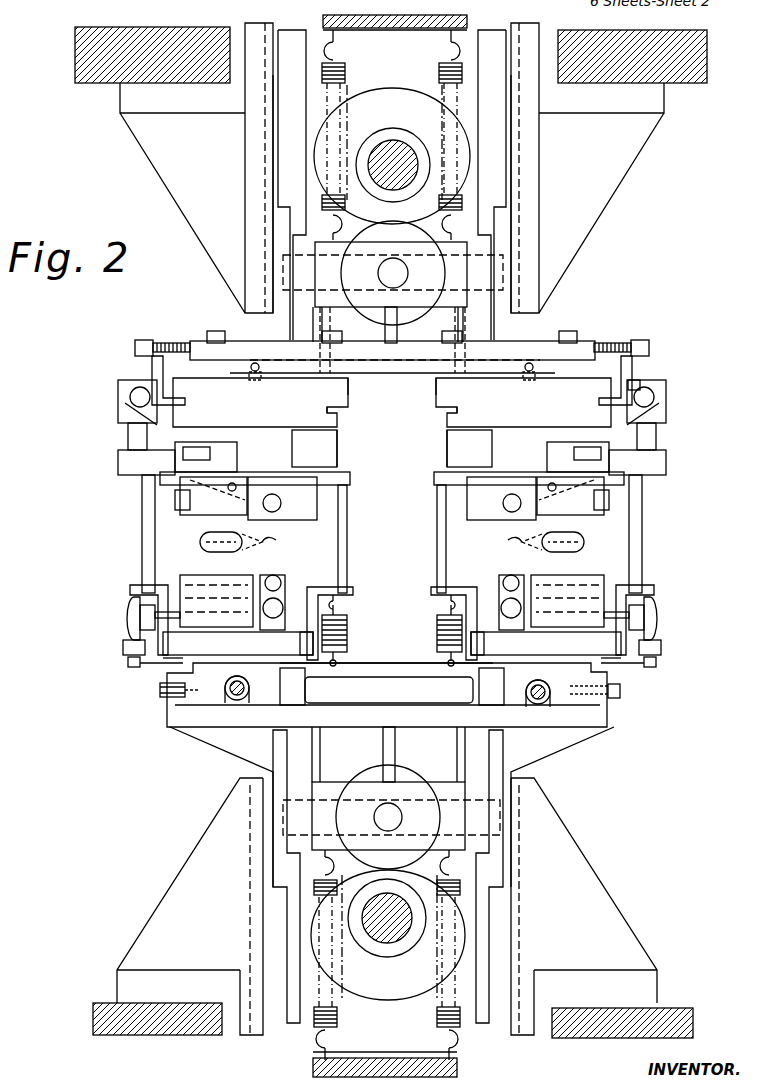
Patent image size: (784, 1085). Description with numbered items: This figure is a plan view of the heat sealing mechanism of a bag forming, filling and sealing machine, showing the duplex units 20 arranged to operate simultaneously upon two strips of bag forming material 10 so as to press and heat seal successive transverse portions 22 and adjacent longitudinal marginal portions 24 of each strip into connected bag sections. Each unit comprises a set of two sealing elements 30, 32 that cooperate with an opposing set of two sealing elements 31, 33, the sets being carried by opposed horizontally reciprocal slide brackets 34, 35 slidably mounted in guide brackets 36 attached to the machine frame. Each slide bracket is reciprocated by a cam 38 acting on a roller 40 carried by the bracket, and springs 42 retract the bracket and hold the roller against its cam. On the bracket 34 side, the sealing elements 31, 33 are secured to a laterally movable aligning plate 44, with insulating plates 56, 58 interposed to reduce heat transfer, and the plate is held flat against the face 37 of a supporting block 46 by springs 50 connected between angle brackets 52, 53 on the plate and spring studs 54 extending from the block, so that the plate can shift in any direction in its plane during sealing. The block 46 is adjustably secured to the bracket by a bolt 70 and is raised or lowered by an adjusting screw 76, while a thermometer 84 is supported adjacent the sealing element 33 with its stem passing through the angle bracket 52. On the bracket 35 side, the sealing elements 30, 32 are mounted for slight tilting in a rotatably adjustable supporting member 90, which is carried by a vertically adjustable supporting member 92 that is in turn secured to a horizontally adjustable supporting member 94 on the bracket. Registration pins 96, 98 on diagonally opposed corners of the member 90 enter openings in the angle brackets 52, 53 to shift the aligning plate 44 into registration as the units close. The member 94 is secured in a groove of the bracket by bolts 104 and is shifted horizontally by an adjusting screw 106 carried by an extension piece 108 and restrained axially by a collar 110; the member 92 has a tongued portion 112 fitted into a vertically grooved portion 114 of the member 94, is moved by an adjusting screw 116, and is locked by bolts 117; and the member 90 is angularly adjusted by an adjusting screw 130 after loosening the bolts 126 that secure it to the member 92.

The duplex units 20 is at (69, 533).
The wire 10 is at (262, 544).
The transverse portions 22 is at (205, 548).
The longitudinal marginal portions 24 is at (392, 546).
The sealing element 30 is at (282, 512).
The sealing element 31 is at (287, 582).
The sealing element 32 is at (200, 515).
The sealing element 33 is at (392, 601).
The slide bracket 34 is at (548, 757).
The slide bracket 35 is at (540, 340).
The guide brackets 36 is at (168, 176).
The face 37 is at (389, 690).
The cam 38 is at (390, 544).
The roller 40 is at (403, 318).
The springs 42 is at (440, 72).
The aligning plate 44 is at (170, 660).
The supporting block 46 is at (190, 727).
The springs 50 is at (125, 646).
The angle bracket 52 is at (130, 590).
The angle bracket 53 is at (430, 590).
The spring studs 54 is at (128, 662).
The insulating plate 56 is at (377, 643).
The insulating plate 58 is at (245, 634).
The bolt 70 is at (165, 697).
The adjusting screw 76 is at (240, 700).
The thermometer 84 is at (128, 616).
The rotatably adjustable supporting member 90 is at (447, 452).
The vertically adjustable supporting member 92 is at (447, 424).
The horizontally adjustable supporting member 94 is at (447, 400).
The registration pin 96 is at (435, 538).
The registration pin 98 is at (142, 556).
The bolts 104 is at (216, 331).
The adjusting screw 106 is at (135, 346).
The extension piece 108 is at (152, 370).
The collar 110 is at (170, 342).
The tongued portion 112 is at (392, 401).
The vertically grooved portion 114 is at (436, 388).
The adjusting screw 116 is at (255, 380).
The bolts 117 is at (640, 384).
The bolts 126 is at (560, 458).
The adjusting screw 130 is at (118, 398).